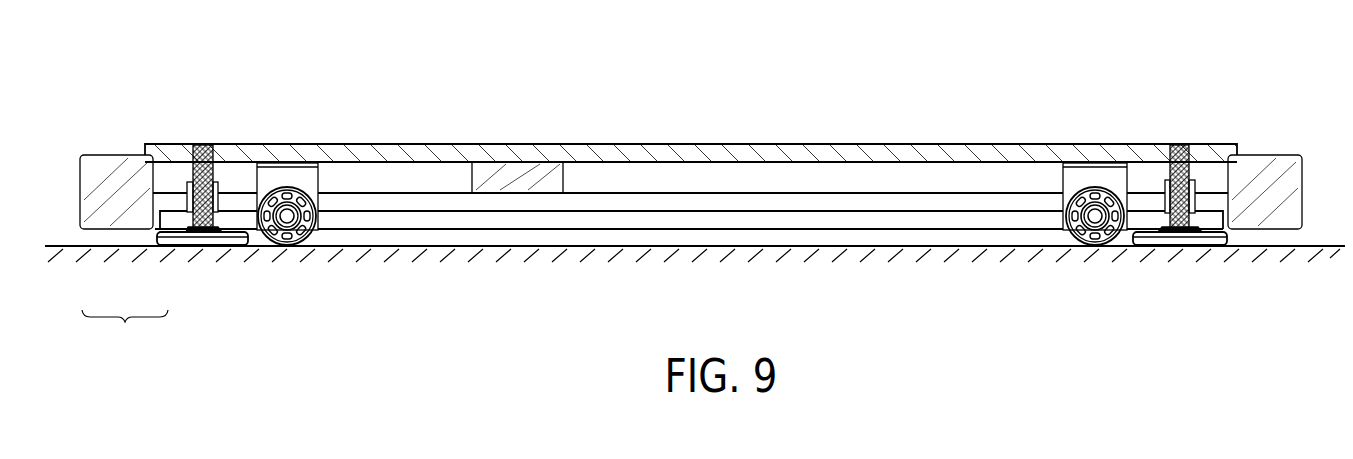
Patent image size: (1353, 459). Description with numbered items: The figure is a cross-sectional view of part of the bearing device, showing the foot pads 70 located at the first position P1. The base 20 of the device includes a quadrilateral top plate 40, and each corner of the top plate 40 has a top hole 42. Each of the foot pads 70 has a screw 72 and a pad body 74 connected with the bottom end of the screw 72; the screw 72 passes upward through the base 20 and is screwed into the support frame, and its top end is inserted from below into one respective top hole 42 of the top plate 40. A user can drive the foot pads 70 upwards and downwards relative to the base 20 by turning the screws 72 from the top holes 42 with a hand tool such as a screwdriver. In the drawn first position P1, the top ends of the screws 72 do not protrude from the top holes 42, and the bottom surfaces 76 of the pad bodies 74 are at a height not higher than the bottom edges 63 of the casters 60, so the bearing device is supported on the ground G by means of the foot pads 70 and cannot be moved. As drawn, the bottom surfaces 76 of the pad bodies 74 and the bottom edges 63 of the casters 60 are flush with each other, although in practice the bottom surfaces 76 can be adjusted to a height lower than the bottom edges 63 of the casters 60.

The base 20 is at (992, 128).
The top plate 40 is at (439, 152).
The top hole 42 is at (216, 148).
The caster 60 is at (301, 177).
The bottom edge 63 is at (287, 248).
The foot pad 70 is at (653, 271).
The screw 72 is at (197, 191).
The pad body 74 is at (178, 238).
The bottom surface 76 is at (207, 248).
The ground G is at (51, 245).
The first position P1 is at (193, 136).